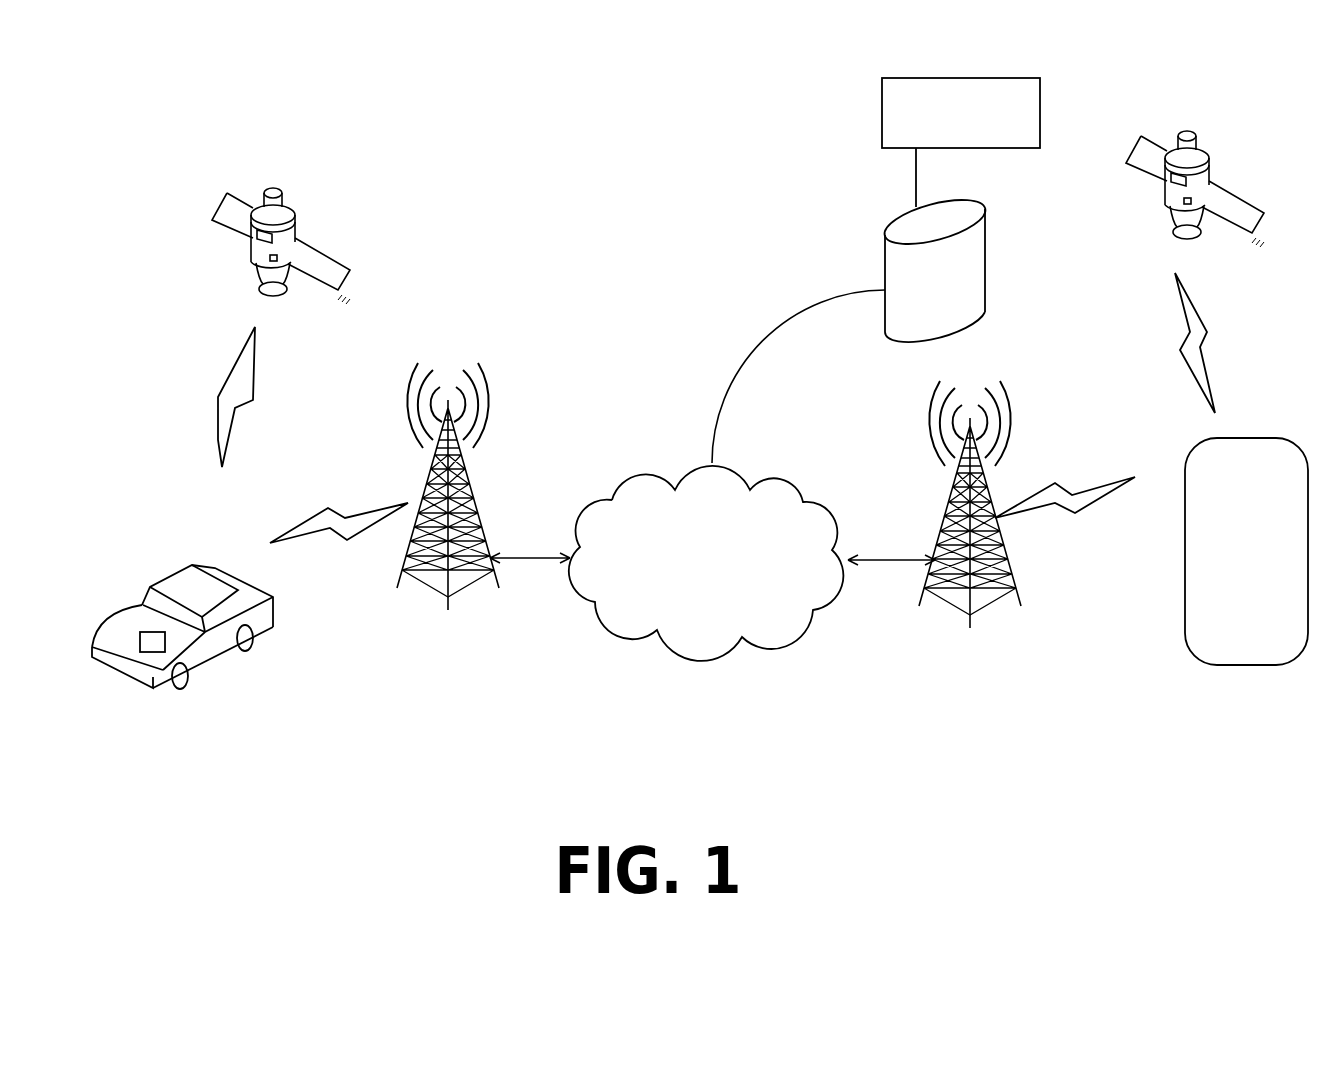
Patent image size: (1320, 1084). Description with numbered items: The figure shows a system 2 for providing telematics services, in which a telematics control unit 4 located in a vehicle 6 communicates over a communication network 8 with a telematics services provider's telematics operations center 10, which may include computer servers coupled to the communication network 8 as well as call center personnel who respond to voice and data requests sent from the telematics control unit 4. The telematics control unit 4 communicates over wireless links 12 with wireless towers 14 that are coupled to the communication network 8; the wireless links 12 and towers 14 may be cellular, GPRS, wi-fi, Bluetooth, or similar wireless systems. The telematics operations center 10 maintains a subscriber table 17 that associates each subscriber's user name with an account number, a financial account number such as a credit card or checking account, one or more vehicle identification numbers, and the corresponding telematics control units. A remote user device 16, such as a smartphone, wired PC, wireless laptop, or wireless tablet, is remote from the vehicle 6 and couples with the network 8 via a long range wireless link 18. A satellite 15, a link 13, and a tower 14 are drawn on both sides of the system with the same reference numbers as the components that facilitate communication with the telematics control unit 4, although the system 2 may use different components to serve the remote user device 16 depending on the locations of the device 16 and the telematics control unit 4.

The system 2 is at (647, 270).
The telematics control unit 4 is at (153, 652).
The vehicle 6 is at (273, 597).
The communication network 8 is at (800, 483).
The telematics operations center 10 is at (918, 333).
The wireless links 12 is at (307, 533).
The link 13 is at (257, 364).
The wireless towers 14 is at (458, 588).
The satellite 15 is at (350, 270).
The remote user device 16 is at (1208, 667).
The subscriber table 17 is at (882, 95).
The long range wireless link 18 is at (1100, 503).